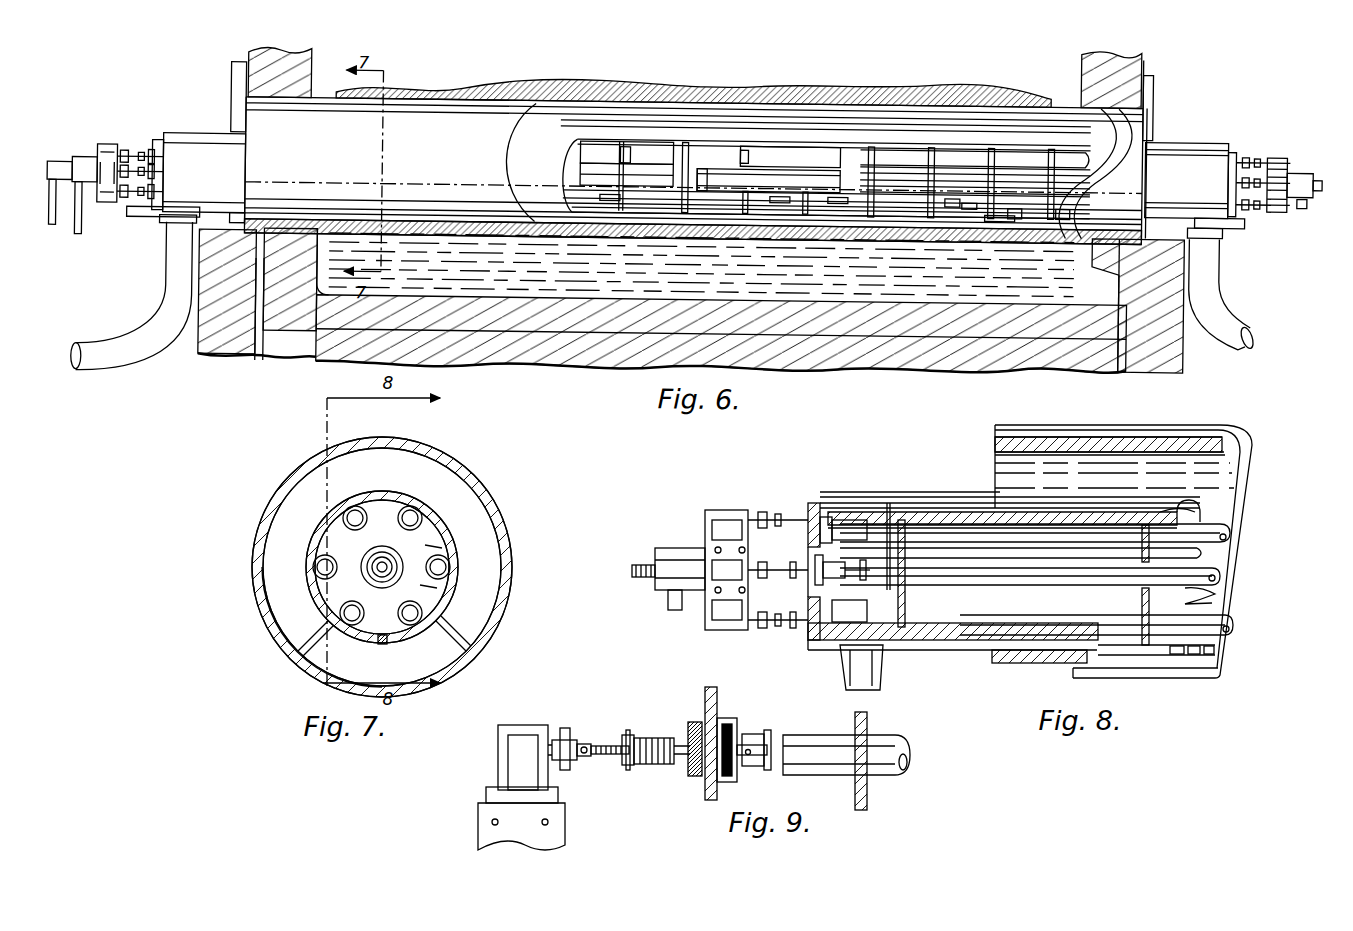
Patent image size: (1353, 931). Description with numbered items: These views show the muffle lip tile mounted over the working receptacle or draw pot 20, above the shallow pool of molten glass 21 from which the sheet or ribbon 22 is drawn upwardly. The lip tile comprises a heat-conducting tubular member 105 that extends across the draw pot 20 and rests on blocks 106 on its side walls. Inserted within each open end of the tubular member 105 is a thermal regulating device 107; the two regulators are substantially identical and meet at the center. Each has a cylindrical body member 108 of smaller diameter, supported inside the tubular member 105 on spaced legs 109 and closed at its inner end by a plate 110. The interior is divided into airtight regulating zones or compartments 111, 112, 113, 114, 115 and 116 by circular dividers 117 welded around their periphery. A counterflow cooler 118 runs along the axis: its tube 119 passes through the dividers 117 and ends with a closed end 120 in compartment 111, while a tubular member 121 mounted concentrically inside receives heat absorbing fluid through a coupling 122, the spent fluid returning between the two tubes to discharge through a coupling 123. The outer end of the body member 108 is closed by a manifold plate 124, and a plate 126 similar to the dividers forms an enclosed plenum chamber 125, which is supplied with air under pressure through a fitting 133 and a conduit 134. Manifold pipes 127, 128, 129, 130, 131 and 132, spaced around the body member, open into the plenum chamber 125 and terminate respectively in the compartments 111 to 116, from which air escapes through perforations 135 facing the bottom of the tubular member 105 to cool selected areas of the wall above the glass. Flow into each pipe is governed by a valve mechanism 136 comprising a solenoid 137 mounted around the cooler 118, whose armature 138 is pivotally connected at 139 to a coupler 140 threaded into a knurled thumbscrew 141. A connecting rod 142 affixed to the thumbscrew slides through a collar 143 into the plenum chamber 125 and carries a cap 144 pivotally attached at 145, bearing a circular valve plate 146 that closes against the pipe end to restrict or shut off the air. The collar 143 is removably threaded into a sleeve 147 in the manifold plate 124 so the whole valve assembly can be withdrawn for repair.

In FIG. 6, the working receptacle or draw pot 20 is at (310, 338).
In FIG. 6, the pool of molten glass 21 is at (462, 275).
In FIG. 6, the sheet or ribbon 22 is at (492, 100).
In FIG. 6, the tubular member 105 is at (462, 125).
In FIG. 7, the tubular member 105 is at (275, 470).
In FIG. 8, the tubular member 105 is at (1005, 455).
In FIG. 6, the blocks 106 is at (235, 230).
In FIG. 6, the thermal regulating device 107 is at (195, 138).
In FIG. 7, the thermal regulating device 107 is at (455, 503).
In FIG. 8, the thermal regulating device 107 is at (857, 490).
In FIG. 6, the cylindrical body member 108 is at (557, 155).
In FIG. 7, the cylindrical body member 108 is at (455, 537).
In FIG. 8, the cylindrical body member 108 is at (965, 503).
In FIG. 7, the legs 109 is at (447, 625).
In FIG. 6, the plate 110 is at (713, 160).
In FIG. 6, the regulating zone or compartment 111 is at (741, 185).
In FIG. 6, the regulating zone or compartment 112 is at (607, 203).
In FIG. 6, the regulating zone or compartment 113 is at (837, 203).
In FIG. 6, the regulating zone or compartment 114 is at (952, 208).
In FIG. 6, the regulating zone or compartment 115 is at (966, 205).
In FIG. 6, the regulating zone or compartment 116 is at (1013, 152).
In FIG. 7, the regulating zone or compartment 116 is at (434, 585).
In FIG. 8, the regulating zone or compartment 116 is at (1200, 552).
In FIG. 6, the circular dividers 117 is at (612, 190).
In FIG. 7, the circular dividers 117 is at (440, 545).
In FIG. 8, the circular dividers 117 is at (1150, 545).
In FIG. 6, the counterflow cooler 118 is at (75, 165).
In FIG. 7, the counterflow cooler 118 is at (382, 544).
In FIG. 8, the counterflow cooler 118 is at (665, 545).
In FIG. 6, the tube 119 is at (617, 195).
In FIG. 7, the tube 119 is at (377, 567).
In FIG. 8, the tube 119 is at (685, 557).
In FIG. 6, the closed end 120 is at (684, 146).
In FIG. 6, the tubular member 121 is at (822, 180).
In FIG. 7, the tubular member 121 is at (374, 575).
In FIG. 6, the coupling 122 is at (1320, 170).
In FIG. 8, the coupling 122 is at (640, 562).
In FIG. 6, the coupling 123 is at (1300, 202).
In FIG. 8, the coupling 123 is at (667, 603).
In FIG. 6, the manifold plate 124 is at (158, 145).
In FIG. 8, the manifold plate 124 is at (814, 503).
In FIG. 9, the manifold plate 124 is at (710, 690).
In FIG. 8, the plenum chamber 125 is at (888, 543).
In FIG. 8, the plate 126 is at (903, 613).
In FIG. 9, the plate 126 is at (870, 793).
In FIG. 6, the manifold pipe 127 is at (772, 157).
In FIG. 7, the manifold pipe 127 is at (412, 513).
In FIG. 6, the manifold pipe 128 is at (852, 180).
In FIG. 7, the manifold pipe 128 is at (350, 518).
In FIG. 8, the manifold pipe 128 is at (1193, 520).
In FIG. 6, the manifold pipe 129 is at (902, 150).
In FIG. 7, the manifold pipe 129 is at (320, 567).
In FIG. 8, the manifold pipe 129 is at (1213, 575).
In FIG. 7, the manifold pipe 130 is at (466, 563).
In FIG. 6, the manifold pipe 131 is at (1015, 210).
In FIG. 7, the manifold pipe 131 is at (433, 640).
In FIG. 8, the manifold pipe 131 is at (1233, 625).
In FIG. 6, the manifold pipe 132 is at (1062, 210).
In FIG. 7, the manifold pipe 132 is at (338, 615).
In FIG. 8, the manifold pipe 132 is at (1143, 625).
In FIG. 6, the fitting 133 is at (1222, 232).
In FIG. 8, the fitting 133 is at (883, 668).
In FIG. 6, the conduit 134 is at (115, 362).
In FIG. 6, the perforations 135 is at (1012, 218).
In FIG. 7, the perforations 135 is at (382, 634).
In FIG. 8, the perforations 135 is at (1208, 655).
In FIG. 6, the valve mechanism 136 is at (1267, 148).
In FIG. 8, the valve mechanism 136 is at (763, 503).
In FIG. 9, the valve mechanism 136 is at (623, 722).
In FIG. 6, the solenoid 137 is at (105, 212).
In FIG. 8, the solenoid 137 is at (727, 507).
In FIG. 9, the solenoid 137 is at (533, 728).
In FIG. 8, the armature 138 is at (755, 623).
In FIG. 9, the armature 138 is at (563, 737).
In FIG. 9, the pivotal connection 139 is at (585, 757).
In FIG. 8, the coupler 140 is at (797, 517).
In FIG. 9, the coupler 140 is at (607, 756).
In FIG. 6, the knurled thumbscrew 141 is at (150, 160).
In FIG. 8, the knurled thumbscrew 141 is at (803, 625).
In FIG. 9, the knurled thumbscrew 141 is at (640, 735).
In FIG. 9, the connecting rod 142 is at (680, 738).
In FIG. 6, the collar 143 is at (1232, 153).
In FIG. 8, the collar 143 is at (813, 642).
In FIG. 9, the collar 143 is at (687, 776).
In FIG. 8, the cap 144 is at (850, 622).
In FIG. 9, the cap 144 is at (755, 742).
In FIG. 8, the pivotal attachment 145 is at (847, 523).
In FIG. 9, the pivotal attachment 145 is at (748, 766).
In FIG. 8, the circular valve plate 146 is at (863, 518).
In FIG. 9, the circular valve plate 146 is at (772, 735).
In FIG. 9, the sleeve 147 is at (725, 718).